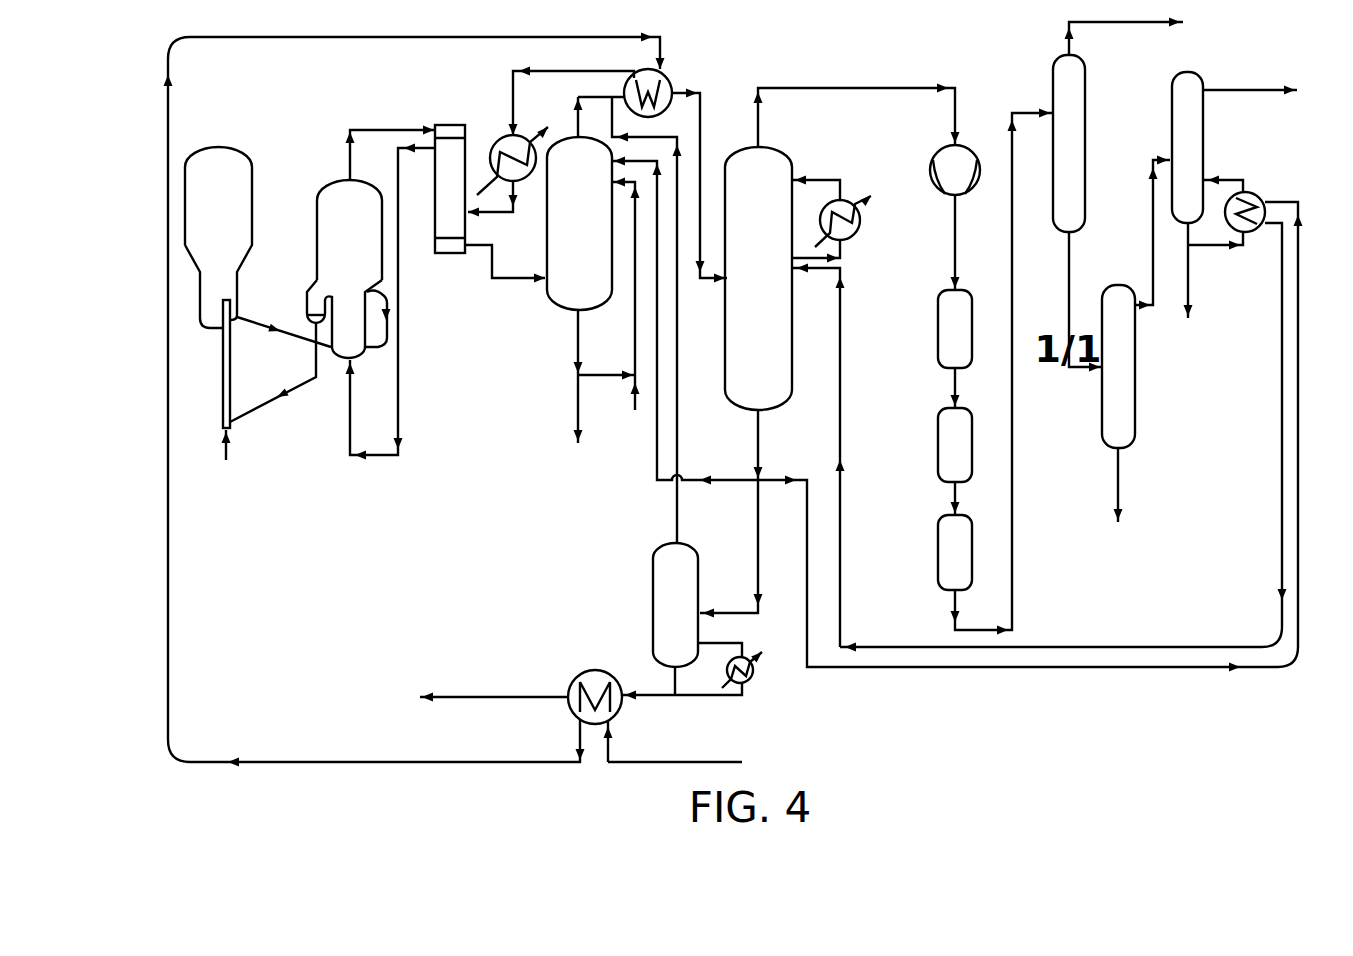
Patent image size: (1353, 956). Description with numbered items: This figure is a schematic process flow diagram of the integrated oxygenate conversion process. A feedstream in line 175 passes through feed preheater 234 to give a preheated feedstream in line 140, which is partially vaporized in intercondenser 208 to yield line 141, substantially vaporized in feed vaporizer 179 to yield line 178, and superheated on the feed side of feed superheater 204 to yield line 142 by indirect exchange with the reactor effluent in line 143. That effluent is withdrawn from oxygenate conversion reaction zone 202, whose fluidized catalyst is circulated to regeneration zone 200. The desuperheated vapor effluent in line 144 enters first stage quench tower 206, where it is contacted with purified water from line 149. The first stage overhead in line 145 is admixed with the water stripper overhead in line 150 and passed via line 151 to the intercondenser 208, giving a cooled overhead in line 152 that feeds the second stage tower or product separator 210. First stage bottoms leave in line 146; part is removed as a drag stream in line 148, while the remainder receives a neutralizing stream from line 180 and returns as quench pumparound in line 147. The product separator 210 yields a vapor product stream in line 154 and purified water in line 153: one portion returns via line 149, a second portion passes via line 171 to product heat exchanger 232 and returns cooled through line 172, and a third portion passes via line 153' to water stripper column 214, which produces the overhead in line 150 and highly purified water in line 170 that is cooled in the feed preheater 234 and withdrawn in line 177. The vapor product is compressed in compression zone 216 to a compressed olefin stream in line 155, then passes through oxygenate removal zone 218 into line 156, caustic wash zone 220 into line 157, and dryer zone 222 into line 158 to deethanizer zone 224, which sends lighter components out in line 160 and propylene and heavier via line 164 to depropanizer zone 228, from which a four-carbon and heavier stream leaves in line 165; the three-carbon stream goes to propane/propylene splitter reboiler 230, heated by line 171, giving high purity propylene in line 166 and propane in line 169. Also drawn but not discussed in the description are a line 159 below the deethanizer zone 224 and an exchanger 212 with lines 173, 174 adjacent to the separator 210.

The preheated feedstream line 140 is at (262, 38).
The partially vaporized feedstream line 141 is at (512, 71).
The superheated feedstream line 142 is at (399, 376).
The reactor effluent stream line 143 is at (363, 130).
The desuperheated vapor effluent stream line 144 is at (525, 282).
The first stage overhead stream line 145 is at (575, 121).
The first stage bottoms stream line 146 is at (576, 341).
The quench pumparound stream line 147 is at (585, 375).
The drag stream line 148 is at (574, 416).
The purified water stream line 149 is at (656, 462).
The water stripper overhead stream line 150 is at (678, 428).
The first stage quench tower overhead stream line 151 is at (616, 95).
The cooled first stage overhead stream line 152 is at (701, 93).
The purified water stream line 153 is at (785, 445).
The purified water stream line to water stripper 153' is at (731, 549).
The vapor product stream line 154 is at (843, 88).
The compressed olefin stream line 155 is at (952, 278).
The essentially oxygenate-free stream line 156 is at (952, 390).
The essentially carbon dioxide free light olefin stream line 157 is at (950, 496).
The dry olefinic product stream line 158 is at (1030, 112).
The line 159 is at (1071, 266).
The deethanizer overhead line 160 is at (1085, 22).
The propylene and heavier stream line 164 is at (1150, 237).
The C4+ stream line 165 is at (1117, 468).
The high purity propylene product line 166 is at (1220, 90).
The propane stream line 169 is at (1192, 282).
The highly purified water stream line 170 is at (657, 696).
The second portion purified water line 171 is at (943, 670).
The cooled purified water stream line 172 is at (940, 646).
The line 173 is at (843, 250).
The line 174 is at (807, 176).
The feedstream line 175 is at (658, 762).
The cooled highly purified water stream line 177 is at (458, 697).
The vaporized feedstream line 178 is at (486, 214).
The feed vaporizer 179 is at (500, 135).
The neutralizing stream line 180 is at (634, 398).
The regeneration zone 200 is at (200, 214).
The oxygenate conversion reaction zone 202 is at (366, 247).
The feed superheater 204 is at (466, 256).
The first stage quench tower 206 is at (597, 228).
The intercondenser 208 is at (667, 74).
The second stage tower or product separator 210 is at (776, 272).
The heat exchanger 212 is at (850, 197).
The water stripper column 214 is at (653, 594).
The compression zone 216 is at (947, 148).
The oxygenate removal zone 218 is at (937, 330).
The caustic wash zone 220 is at (937, 450).
The dryer zone 222 is at (937, 562).
The deethanizer zone 224 is at (1088, 74).
The depropanizer zone 228 is at (1138, 393).
The propane/propylene splitter reboiler 230 is at (1205, 139).
The product heat exchanger 232 is at (1255, 195).
The feed preheater 234 is at (585, 668).